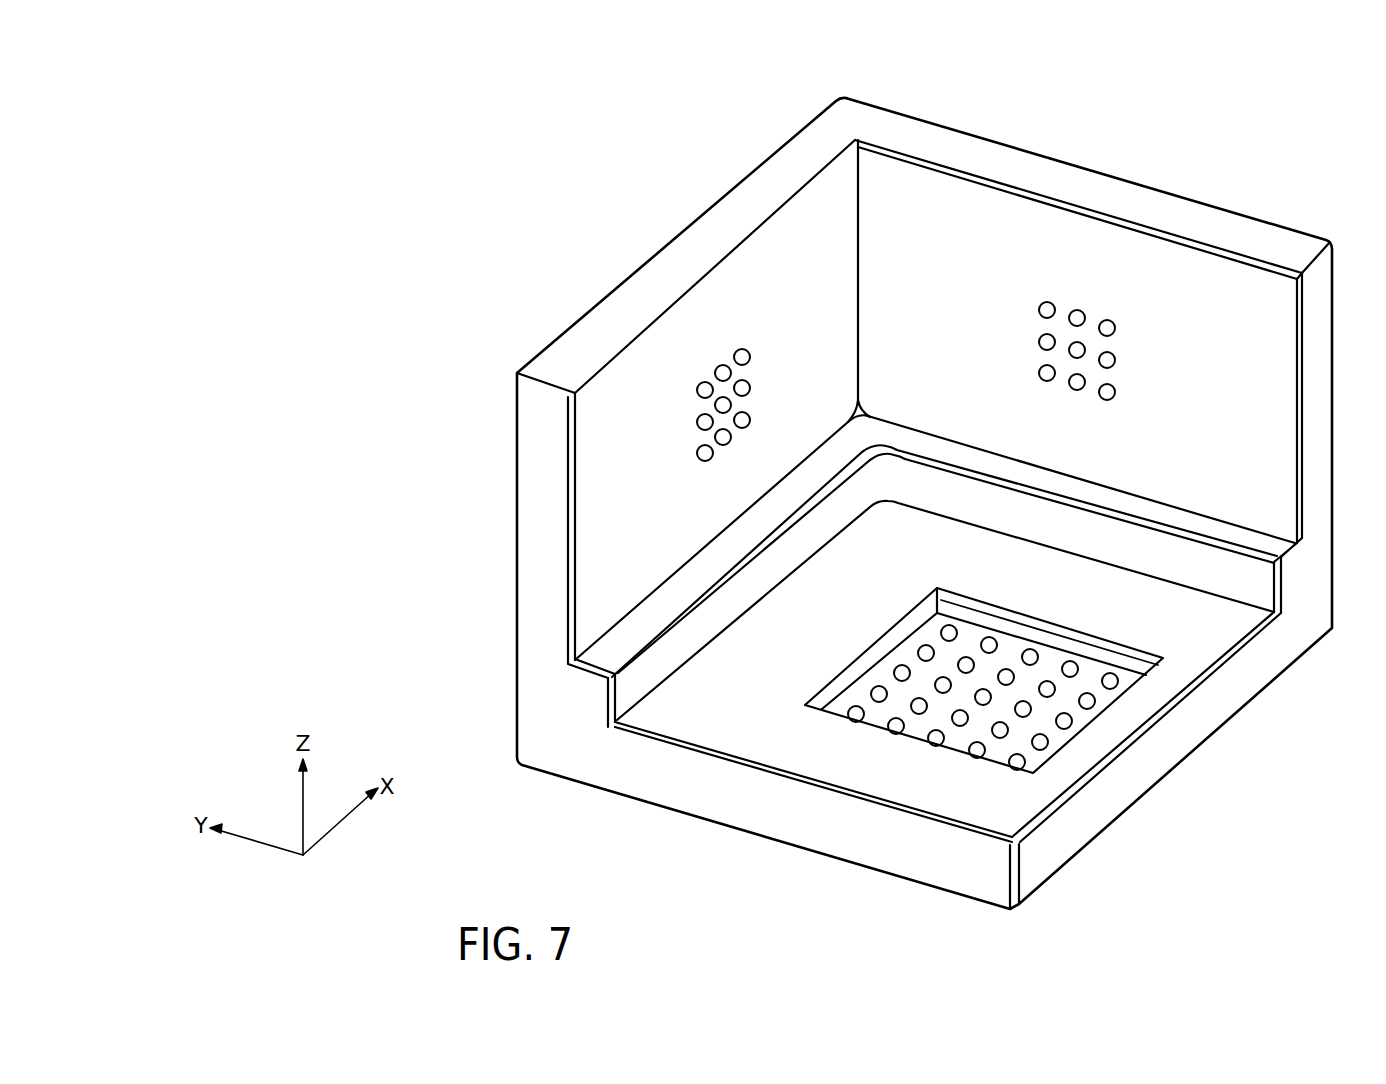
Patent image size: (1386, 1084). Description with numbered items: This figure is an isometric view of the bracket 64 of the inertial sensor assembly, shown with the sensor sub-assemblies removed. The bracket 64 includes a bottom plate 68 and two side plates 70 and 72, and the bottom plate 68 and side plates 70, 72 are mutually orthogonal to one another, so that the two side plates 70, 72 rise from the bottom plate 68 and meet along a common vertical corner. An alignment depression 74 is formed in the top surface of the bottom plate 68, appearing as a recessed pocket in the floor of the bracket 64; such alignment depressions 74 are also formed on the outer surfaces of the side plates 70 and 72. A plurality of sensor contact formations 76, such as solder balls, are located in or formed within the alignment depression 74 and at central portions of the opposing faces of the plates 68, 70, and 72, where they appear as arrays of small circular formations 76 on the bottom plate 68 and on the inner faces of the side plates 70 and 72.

The bracket 64 is at (840, 118).
The bottom plate 68 is at (753, 815).
The side plate 70 is at (565, 355).
The side plate 72 is at (1279, 238).
The alignment depression 74 is at (892, 627).
The sensor contact formation 76 is at (750, 356).